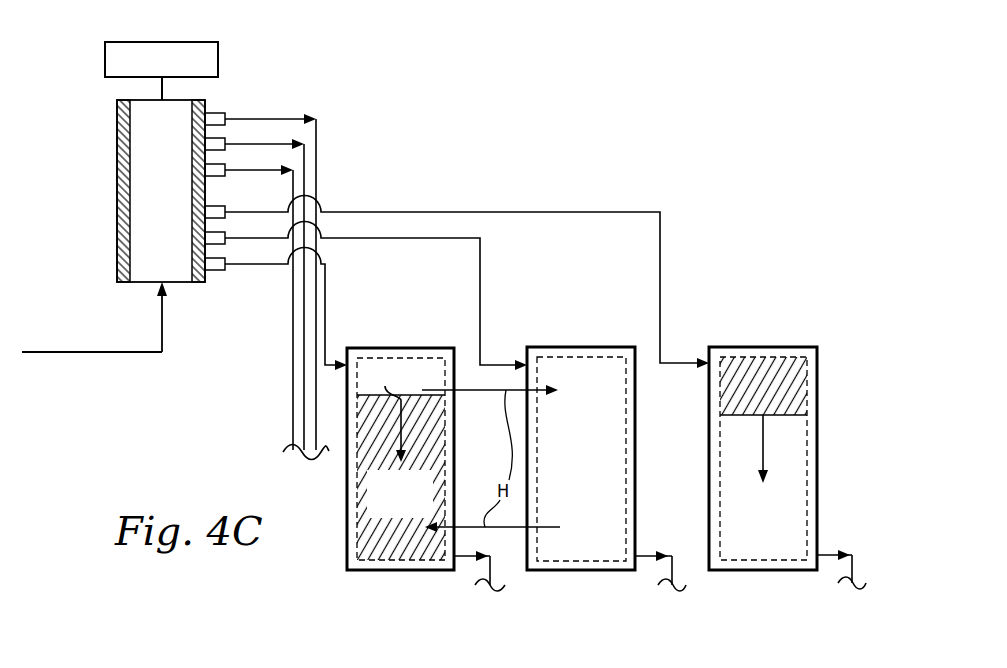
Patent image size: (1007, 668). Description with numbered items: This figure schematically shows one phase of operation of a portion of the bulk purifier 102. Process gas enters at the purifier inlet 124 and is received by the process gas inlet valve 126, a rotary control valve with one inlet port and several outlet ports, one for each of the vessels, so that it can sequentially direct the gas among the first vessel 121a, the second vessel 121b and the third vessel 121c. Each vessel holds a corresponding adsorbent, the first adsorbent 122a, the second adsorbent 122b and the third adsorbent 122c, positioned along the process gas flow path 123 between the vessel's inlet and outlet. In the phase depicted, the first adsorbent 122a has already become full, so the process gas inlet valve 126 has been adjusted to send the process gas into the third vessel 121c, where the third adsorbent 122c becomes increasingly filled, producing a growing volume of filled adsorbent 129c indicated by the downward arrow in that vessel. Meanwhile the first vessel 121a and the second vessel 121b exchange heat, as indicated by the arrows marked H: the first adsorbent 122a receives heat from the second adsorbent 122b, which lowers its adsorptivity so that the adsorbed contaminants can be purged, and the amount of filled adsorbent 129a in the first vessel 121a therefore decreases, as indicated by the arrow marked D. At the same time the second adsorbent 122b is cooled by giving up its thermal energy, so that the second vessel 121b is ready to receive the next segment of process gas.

The bulk purifier 102 is at (577, 123).
The process gas inlet valve 126 is at (205, 105).
The process gas flow path 123 is at (162, 312).
The purifier inlet 124 is at (80, 352).
The first vessel 121a is at (389, 481).
The second vessel 121b is at (608, 480).
The third vessel 121c is at (789, 470).
The first adsorbent 122a is at (445, 402).
The second adsorbent 122b is at (626, 402).
The third adsorbent 122c is at (807, 473).
The filled adsorbent 129a is at (360, 520).
The filled adsorbent 129c is at (802, 378).